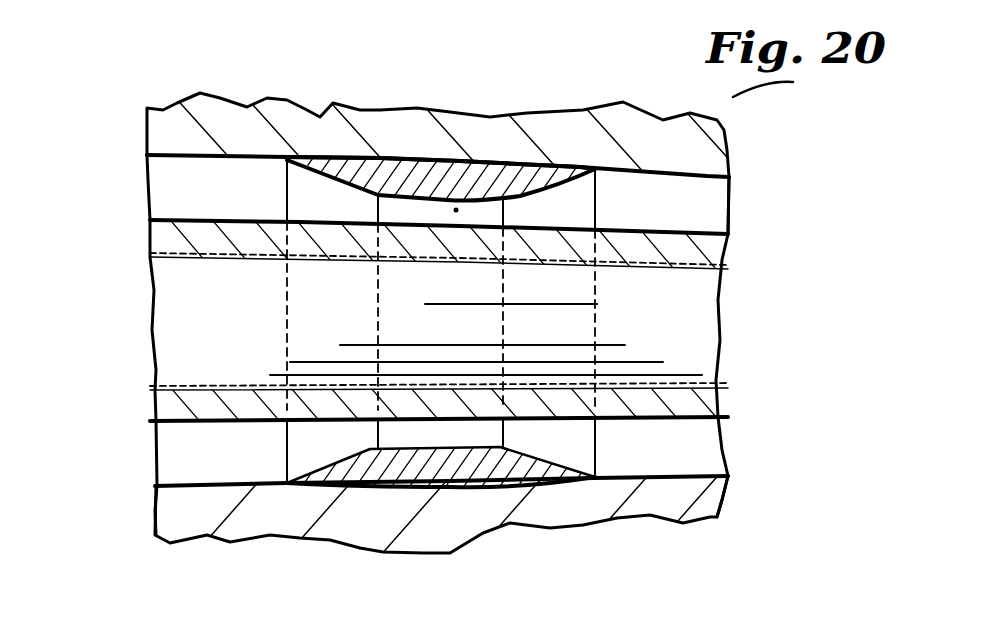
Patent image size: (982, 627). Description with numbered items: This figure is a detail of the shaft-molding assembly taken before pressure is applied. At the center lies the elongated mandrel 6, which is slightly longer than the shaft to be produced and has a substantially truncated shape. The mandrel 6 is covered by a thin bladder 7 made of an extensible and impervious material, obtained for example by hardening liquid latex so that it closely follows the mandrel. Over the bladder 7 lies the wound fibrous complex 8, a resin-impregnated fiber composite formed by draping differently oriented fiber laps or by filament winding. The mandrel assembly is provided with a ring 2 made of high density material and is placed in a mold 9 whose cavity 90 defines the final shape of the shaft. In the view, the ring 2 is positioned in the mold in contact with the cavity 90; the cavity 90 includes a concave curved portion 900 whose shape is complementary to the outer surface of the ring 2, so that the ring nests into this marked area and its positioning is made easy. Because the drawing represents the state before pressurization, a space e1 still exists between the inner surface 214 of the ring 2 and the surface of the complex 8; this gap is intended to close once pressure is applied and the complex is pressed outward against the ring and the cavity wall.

The mold 9 is at (160, 128).
The concave curved portion 900 is at (328, 148).
The inner surface of the ring 214 is at (426, 200).
The space e1 is at (456, 210).
The wound fibrous complex 8 is at (555, 243).
The cavity 90 is at (679, 177).
The bladder 7 is at (155, 254).
The mandrel 6 is at (180, 330).
The ring 2 is at (477, 488).